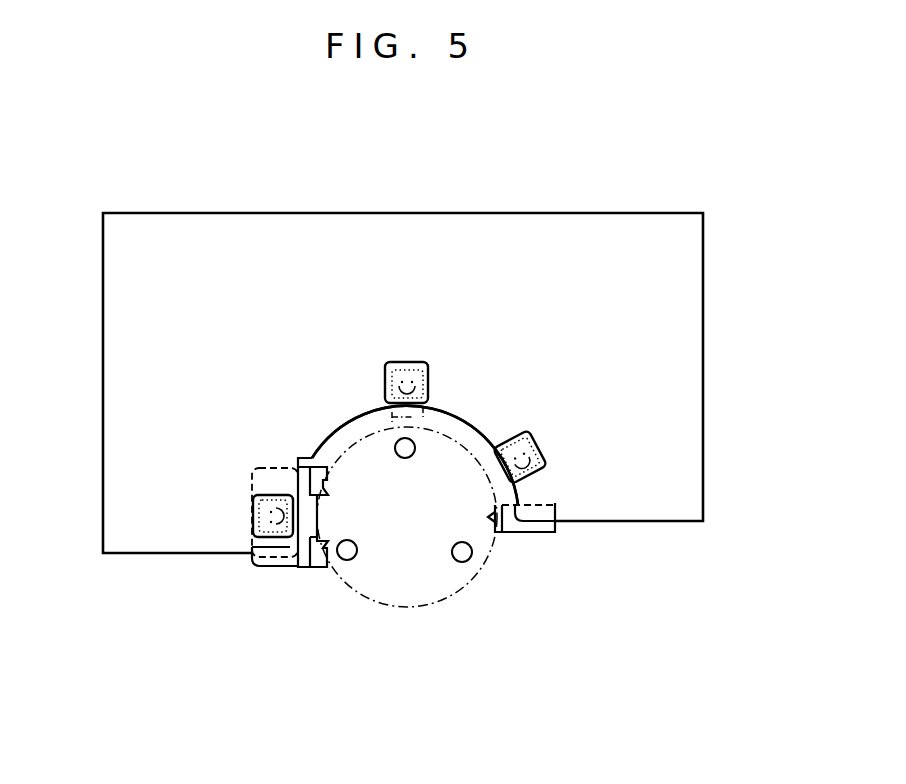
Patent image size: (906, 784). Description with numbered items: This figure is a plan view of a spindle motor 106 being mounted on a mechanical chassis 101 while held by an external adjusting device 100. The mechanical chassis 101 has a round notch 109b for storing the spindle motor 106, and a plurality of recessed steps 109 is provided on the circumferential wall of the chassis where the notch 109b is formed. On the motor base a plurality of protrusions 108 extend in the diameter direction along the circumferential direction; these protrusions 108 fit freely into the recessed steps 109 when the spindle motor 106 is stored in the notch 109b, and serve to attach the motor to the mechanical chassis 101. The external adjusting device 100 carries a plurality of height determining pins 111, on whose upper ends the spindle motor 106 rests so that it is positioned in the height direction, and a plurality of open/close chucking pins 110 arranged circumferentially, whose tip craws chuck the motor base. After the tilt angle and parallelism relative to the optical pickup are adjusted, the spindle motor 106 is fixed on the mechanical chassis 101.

The external adjusting device 100 is at (245, 567).
The mechanical chassis 101 is at (663, 345).
The spindle motor 106 is at (340, 583).
The protrusions 108 is at (280, 490).
The recessed steps 109 is at (413, 362).
The round notch 109b is at (462, 418).
The chucking pins 110 is at (287, 556).
The height determining pins 111 is at (351, 560).